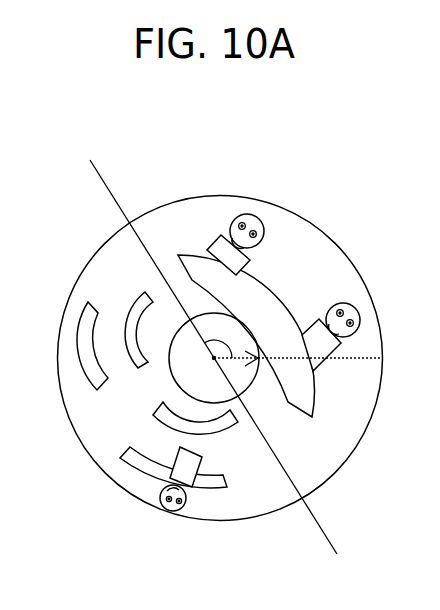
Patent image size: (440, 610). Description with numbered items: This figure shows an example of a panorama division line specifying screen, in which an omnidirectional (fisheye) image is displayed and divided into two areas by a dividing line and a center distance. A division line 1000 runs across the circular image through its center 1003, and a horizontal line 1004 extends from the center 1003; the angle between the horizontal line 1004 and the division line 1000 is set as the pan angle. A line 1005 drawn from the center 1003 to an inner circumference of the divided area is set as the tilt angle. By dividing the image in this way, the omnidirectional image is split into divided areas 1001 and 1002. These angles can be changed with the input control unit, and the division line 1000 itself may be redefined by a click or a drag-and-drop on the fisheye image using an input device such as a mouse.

The division line 1000 is at (103, 181).
The divided area 1001 is at (265, 213).
The divided area 1002 is at (90, 255).
The center 1003 is at (213, 358).
The horizontal line 1004 is at (365, 357).
The line 1005 is at (242, 360).